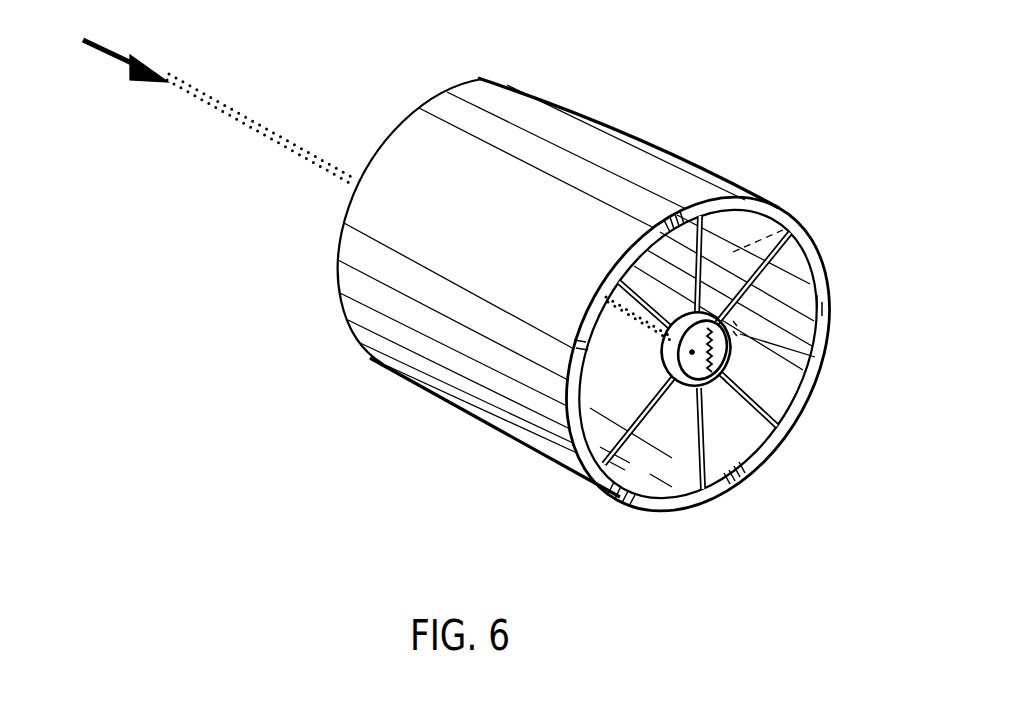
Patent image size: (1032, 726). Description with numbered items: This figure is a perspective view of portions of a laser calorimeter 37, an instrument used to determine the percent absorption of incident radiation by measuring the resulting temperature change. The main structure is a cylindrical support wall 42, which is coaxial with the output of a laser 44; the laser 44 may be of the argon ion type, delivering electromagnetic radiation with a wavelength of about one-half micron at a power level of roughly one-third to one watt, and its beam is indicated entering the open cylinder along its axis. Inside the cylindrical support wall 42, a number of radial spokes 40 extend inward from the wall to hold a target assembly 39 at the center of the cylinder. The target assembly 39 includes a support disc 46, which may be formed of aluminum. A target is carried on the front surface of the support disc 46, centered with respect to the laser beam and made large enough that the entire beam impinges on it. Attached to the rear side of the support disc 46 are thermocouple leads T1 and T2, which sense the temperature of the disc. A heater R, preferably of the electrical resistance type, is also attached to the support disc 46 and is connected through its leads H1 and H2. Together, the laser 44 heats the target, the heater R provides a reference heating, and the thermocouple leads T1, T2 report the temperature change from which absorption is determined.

The laser calorimeter 37 is at (737, 76).
The cylindrical support wall 42 is at (700, 163).
The radial spokes 40 is at (765, 250).
The target assembly 39 is at (736, 278).
The support disc 46 is at (735, 365).
The heater lead H1 is at (735, 324).
The heater R is at (735, 333).
The heater lead H2 is at (725, 380).
The thermocouple lead T1 is at (693, 353).
The thermocouple lead T2 is at (692, 353).
The laser 44 is at (112, 60).